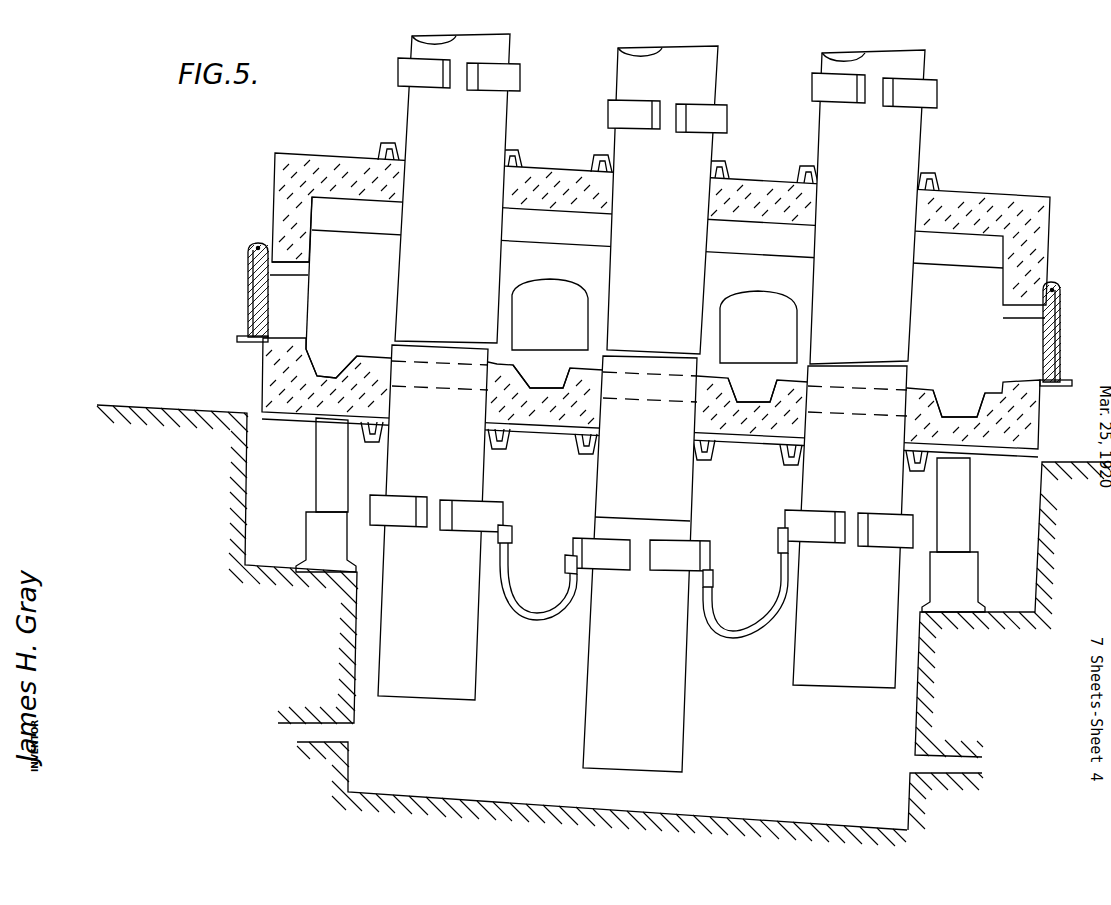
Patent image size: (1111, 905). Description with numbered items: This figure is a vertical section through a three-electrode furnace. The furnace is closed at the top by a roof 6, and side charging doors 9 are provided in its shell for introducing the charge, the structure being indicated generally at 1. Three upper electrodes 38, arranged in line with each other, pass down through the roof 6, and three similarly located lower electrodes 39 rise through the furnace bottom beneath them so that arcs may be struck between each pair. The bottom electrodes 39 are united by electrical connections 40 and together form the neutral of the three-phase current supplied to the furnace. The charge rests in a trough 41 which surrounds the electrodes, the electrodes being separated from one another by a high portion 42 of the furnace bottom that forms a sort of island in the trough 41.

The casing wall port 1 is at (302, 245).
The roof 6 is at (326, 154).
The side charging door 9 is at (1030, 322).
The upper electrode 38 is at (666, 199).
The lower electrode 39 is at (641, 558).
The electrical connection 40 is at (538, 622).
The trough 41 is at (344, 380).
The high portion of the furnace bottom 42 is at (578, 366).